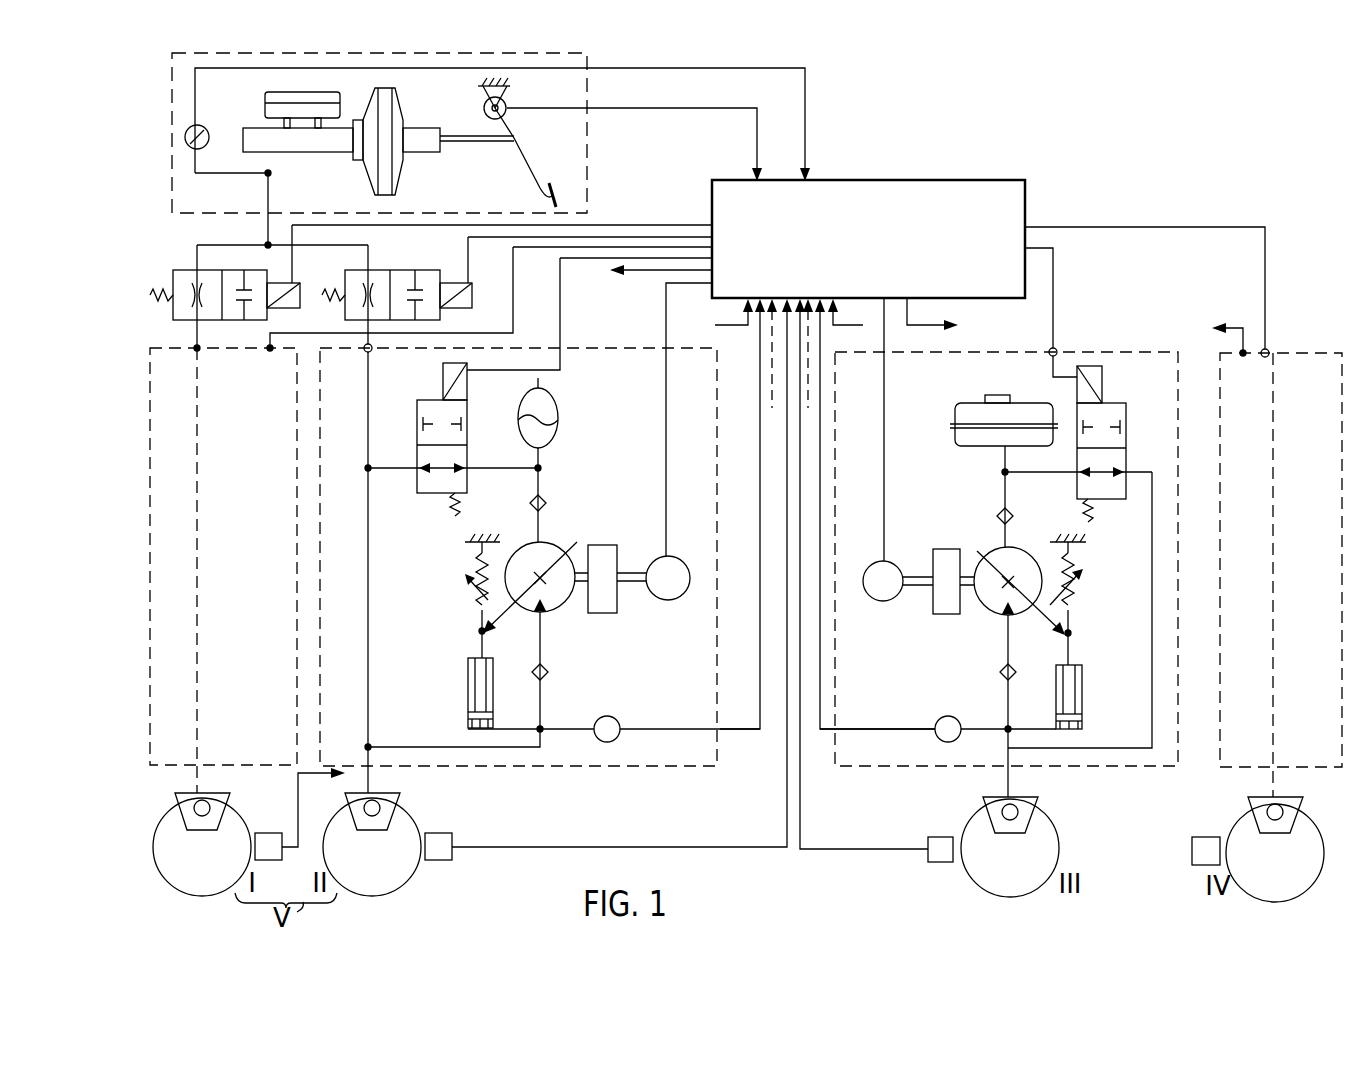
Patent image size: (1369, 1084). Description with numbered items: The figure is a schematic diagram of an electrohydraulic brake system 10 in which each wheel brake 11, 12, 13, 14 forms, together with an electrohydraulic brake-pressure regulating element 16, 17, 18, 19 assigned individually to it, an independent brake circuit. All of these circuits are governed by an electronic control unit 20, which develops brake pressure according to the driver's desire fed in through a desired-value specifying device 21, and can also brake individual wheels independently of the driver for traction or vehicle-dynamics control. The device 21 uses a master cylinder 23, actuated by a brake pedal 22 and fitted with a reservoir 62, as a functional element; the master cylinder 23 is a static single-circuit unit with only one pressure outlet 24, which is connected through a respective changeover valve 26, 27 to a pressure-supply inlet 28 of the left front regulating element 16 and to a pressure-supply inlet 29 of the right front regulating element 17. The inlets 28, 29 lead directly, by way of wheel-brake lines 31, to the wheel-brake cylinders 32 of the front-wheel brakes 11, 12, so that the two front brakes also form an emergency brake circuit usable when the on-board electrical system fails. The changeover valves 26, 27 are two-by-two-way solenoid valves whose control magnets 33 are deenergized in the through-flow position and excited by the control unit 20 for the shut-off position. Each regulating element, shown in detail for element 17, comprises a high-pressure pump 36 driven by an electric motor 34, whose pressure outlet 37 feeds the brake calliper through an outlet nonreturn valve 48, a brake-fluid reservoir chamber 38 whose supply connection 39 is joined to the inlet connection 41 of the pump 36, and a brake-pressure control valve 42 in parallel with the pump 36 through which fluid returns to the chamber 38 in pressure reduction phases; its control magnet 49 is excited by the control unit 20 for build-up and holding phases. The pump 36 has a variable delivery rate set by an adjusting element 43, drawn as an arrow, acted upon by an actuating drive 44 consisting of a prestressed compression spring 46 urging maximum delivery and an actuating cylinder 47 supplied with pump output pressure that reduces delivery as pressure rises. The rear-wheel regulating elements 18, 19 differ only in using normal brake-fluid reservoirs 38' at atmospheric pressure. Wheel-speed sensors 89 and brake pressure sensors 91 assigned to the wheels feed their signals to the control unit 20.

The electrohydraulic brake system 10 is at (1165, 206).
The left-hand front-wheel brake 11 is at (168, 881).
The right-hand front-wheel brake 12 is at (403, 877).
The rear-wheel brake 13 is at (964, 884).
The rear-wheel brake 14 is at (1314, 880).
The brake-pressure regulating element 16 is at (151, 766).
The brake-pressure regulating element 17 is at (556, 767).
The brake-pressure regulating element 18 is at (838, 768).
The brake-pressure regulating element 19 is at (1341, 769).
The electronic control unit 20 is at (918, 195).
The desired-value specifying device 21 is at (587, 93).
The brake pedal 22 is at (535, 184).
The master cylinder 23 is at (241, 126).
The pressure outlet 24 is at (265, 176).
The changeover valve 26 is at (182, 270).
The changeover valve 27 is at (441, 270).
The pressure-supply inlet 28 is at (200, 352).
The pressure-supply inlet 29 is at (366, 354).
The wheel-brake line 31 is at (197, 577).
The wheel-brake cylinder 32 is at (223, 795).
The control magnet 33 is at (302, 294).
The electric motor 34 is at (675, 560).
The high-pressure pump 36 is at (565, 550).
The pressure outlet 37 is at (541, 622).
The brake-fluid reservoir chamber 38 is at (567, 423).
The brake-fluid reservoir 38' is at (983, 419).
The supply connection 39 is at (541, 470).
The inlet connection 41 is at (531, 534).
The brake-pressure control valve 42 is at (417, 407).
The adjusting element 43 is at (491, 626).
The actuating drive 44 is at (475, 632).
The compression spring 46 is at (468, 604).
The actuating cylinder 47 is at (466, 692).
The outlet nonreturn valve 48 is at (531, 678).
The control magnet 49 is at (470, 380).
The reservoir 62 is at (314, 92).
The wheel-speed sensor 89 is at (281, 833).
The brake pressure sensor 91 is at (607, 716).